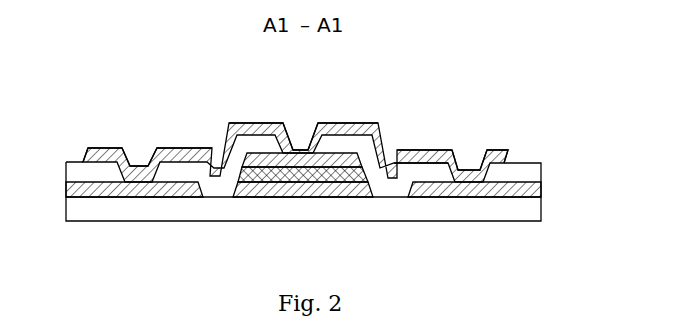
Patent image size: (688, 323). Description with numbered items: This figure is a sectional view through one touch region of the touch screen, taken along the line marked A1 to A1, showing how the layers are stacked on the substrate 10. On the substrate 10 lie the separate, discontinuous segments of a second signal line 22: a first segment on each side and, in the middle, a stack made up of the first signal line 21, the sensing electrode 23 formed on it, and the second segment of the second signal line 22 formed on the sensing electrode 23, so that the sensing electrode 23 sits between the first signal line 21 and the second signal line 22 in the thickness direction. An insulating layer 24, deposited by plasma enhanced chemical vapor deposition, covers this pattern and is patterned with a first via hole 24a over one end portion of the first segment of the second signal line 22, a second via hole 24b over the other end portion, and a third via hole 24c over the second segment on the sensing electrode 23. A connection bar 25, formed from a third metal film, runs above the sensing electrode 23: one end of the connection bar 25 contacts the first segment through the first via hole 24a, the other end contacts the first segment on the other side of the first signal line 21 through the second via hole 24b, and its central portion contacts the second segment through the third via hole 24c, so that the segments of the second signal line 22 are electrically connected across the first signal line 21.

The substrate 10 is at (142, 208).
The first signal line 21 is at (346, 190).
The second signal line 22 is at (152, 190).
The sensing electrode 23 is at (250, 178).
The insulating layer 24 is at (228, 180).
The first via hole 24a is at (146, 156).
The second via hole 24b is at (463, 157).
The third via hole 24c is at (305, 137).
The connection bar 25 is at (397, 167).